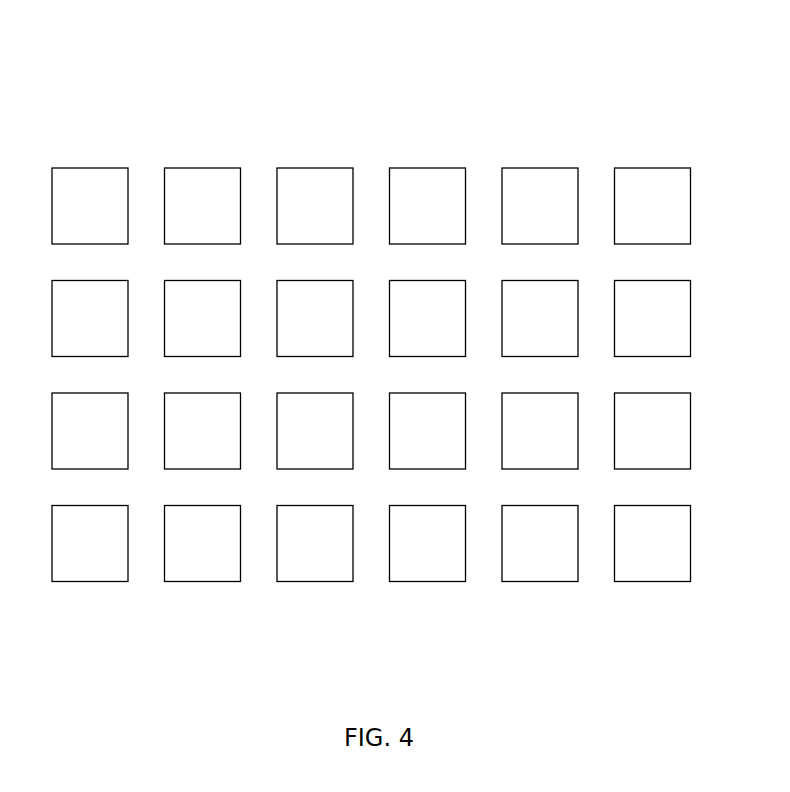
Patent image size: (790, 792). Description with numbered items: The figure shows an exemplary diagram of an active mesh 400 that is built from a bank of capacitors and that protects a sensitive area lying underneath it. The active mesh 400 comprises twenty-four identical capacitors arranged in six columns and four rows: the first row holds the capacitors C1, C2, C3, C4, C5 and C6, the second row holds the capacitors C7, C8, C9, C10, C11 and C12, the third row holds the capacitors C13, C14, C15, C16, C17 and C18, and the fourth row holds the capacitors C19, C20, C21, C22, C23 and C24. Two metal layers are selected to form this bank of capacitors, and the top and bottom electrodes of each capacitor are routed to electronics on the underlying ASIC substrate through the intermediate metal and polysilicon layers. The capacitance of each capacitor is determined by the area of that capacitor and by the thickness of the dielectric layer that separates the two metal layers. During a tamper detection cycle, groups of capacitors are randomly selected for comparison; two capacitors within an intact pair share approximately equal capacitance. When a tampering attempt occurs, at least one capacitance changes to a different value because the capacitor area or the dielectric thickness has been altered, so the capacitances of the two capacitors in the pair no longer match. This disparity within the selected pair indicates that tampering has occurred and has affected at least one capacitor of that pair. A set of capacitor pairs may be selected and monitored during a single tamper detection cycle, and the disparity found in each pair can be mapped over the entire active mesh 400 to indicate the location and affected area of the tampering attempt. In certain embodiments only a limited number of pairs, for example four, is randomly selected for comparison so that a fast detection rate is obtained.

The active mesh 400 is at (371, 305).
The capacitor C1 is at (90, 206).
The capacitor C2 is at (203, 206).
The capacitor C3 is at (315, 206).
The capacitor C4 is at (428, 206).
The capacitor C5 is at (540, 206).
The capacitor C6 is at (653, 206).
The capacitor C7 is at (90, 319).
The capacitor C8 is at (203, 319).
The capacitor C9 is at (315, 319).
The capacitor C10 is at (428, 319).
The capacitor C11 is at (540, 319).
The capacitor C12 is at (653, 319).
The capacitor C13 is at (90, 431).
The capacitor C14 is at (203, 431).
The capacitor C15 is at (315, 431).
The capacitor C16 is at (428, 431).
The capacitor C17 is at (540, 431).
The capacitor C18 is at (653, 431).
The capacitor C19 is at (90, 544).
The capacitor C20 is at (203, 544).
The capacitor C21 is at (315, 544).
The capacitor C22 is at (428, 544).
The capacitor C23 is at (540, 544).
The capacitor C24 is at (653, 544).